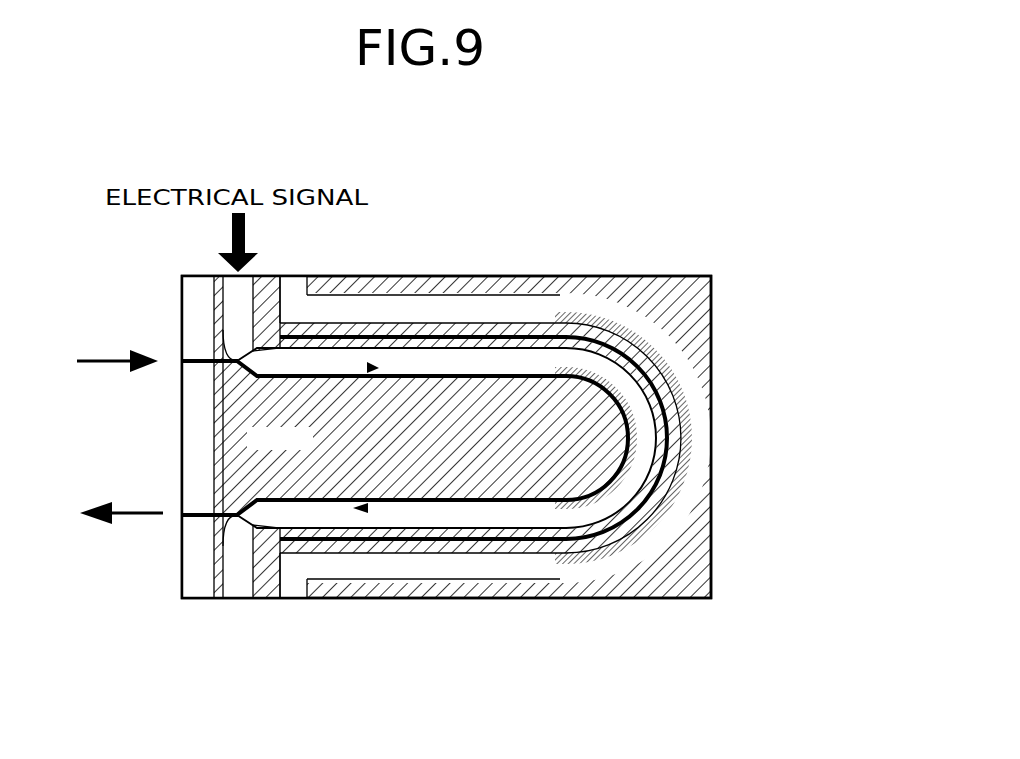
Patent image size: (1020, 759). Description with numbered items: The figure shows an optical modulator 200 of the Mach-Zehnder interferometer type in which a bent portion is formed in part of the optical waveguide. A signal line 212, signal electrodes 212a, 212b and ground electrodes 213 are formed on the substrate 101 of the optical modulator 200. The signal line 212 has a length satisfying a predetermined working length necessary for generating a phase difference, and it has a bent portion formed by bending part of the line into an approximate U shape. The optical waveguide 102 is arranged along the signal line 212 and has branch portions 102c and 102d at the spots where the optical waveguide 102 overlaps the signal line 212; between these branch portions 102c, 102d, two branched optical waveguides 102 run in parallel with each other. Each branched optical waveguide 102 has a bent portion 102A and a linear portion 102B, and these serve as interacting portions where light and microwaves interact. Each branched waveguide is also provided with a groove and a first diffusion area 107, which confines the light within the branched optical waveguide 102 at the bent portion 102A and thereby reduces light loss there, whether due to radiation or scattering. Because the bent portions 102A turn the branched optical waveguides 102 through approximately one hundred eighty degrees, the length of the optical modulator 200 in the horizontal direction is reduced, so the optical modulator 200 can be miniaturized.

The optical modulator 200 is at (535, 228).
The substrate 101 is at (660, 276).
The optical waveguide 102 is at (668, 386).
The bent portion 102A is at (660, 512).
The linear portion 102B is at (347, 497).
The branch portion 102c is at (223, 370).
The branch portion 102d is at (230, 518).
The first diffusion area 107 is at (665, 465).
The signal line 212 is at (414, 276).
The signal electrode 212a is at (262, 276).
The signal electrode 212b is at (243, 592).
The ground electrode 213 is at (640, 532).